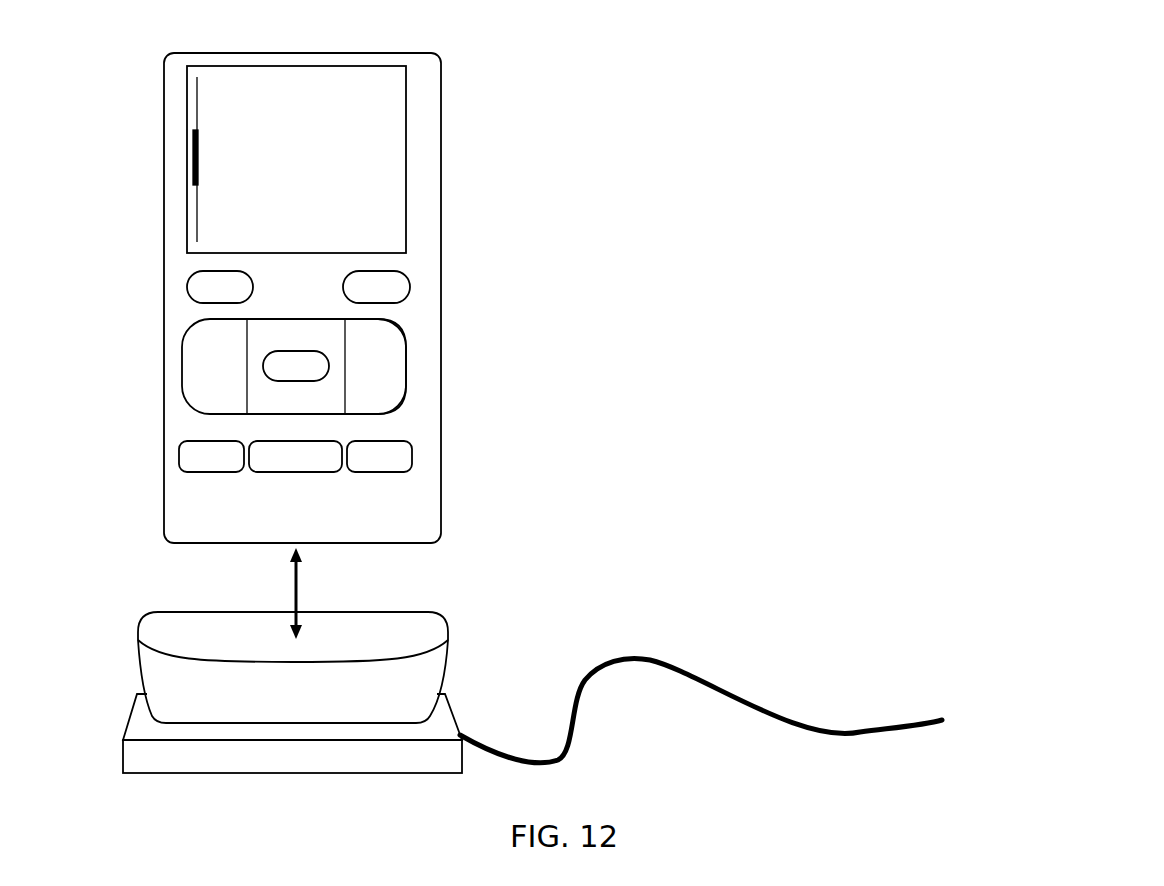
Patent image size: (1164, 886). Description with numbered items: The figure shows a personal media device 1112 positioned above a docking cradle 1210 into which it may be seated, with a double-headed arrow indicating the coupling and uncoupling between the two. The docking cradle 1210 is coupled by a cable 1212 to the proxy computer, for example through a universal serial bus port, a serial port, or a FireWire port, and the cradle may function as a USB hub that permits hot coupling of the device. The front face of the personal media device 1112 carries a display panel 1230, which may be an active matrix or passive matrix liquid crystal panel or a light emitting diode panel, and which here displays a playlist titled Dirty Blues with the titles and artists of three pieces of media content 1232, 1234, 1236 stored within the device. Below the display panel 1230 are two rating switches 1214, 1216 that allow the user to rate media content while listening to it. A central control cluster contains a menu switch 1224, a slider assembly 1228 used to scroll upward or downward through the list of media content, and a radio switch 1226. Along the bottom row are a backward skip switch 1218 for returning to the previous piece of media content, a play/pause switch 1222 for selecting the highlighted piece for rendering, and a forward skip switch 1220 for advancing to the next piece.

The personal media device 1112 is at (168, 53).
The docking cradle 1210 is at (140, 622).
The cable 1212 is at (638, 657).
The rating switch 1214 is at (188, 285).
The rating switch 1216 is at (405, 281).
The backward skip switch 1218 is at (180, 442).
The forward skip switch 1220 is at (408, 444).
The play/pause switch 1222 is at (272, 472).
The menu switch 1224 is at (197, 348).
The radio switch 1226 is at (395, 356).
The slider assembly 1228 is at (322, 350).
The display panel 1230 is at (187, 87).
The piece of media content 1232 is at (197, 125).
The piece of media content 1234 is at (197, 172).
The piece of media content 1236 is at (197, 215).